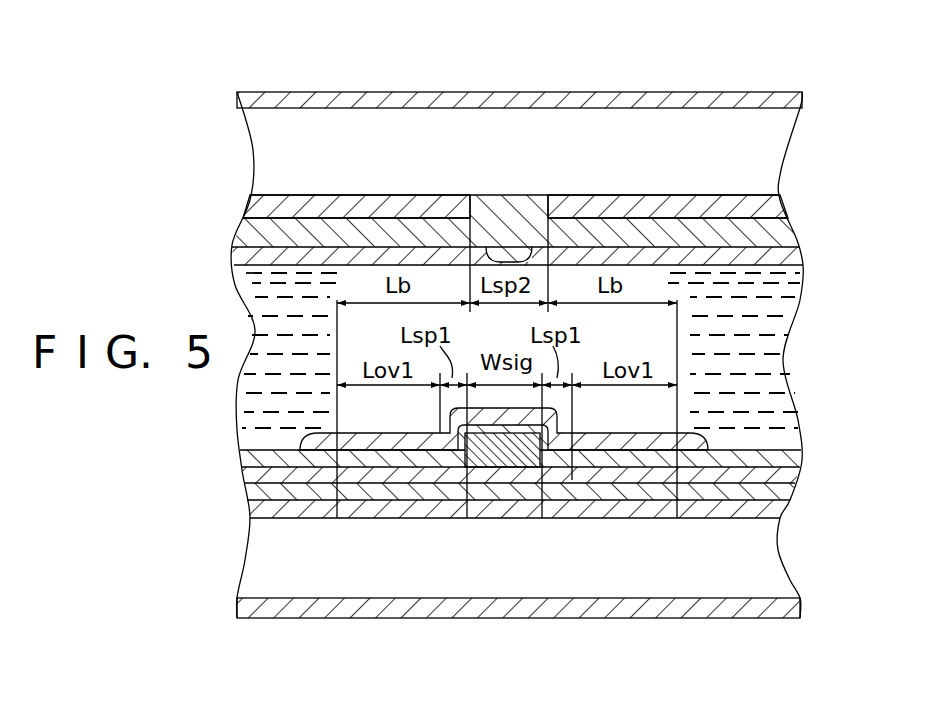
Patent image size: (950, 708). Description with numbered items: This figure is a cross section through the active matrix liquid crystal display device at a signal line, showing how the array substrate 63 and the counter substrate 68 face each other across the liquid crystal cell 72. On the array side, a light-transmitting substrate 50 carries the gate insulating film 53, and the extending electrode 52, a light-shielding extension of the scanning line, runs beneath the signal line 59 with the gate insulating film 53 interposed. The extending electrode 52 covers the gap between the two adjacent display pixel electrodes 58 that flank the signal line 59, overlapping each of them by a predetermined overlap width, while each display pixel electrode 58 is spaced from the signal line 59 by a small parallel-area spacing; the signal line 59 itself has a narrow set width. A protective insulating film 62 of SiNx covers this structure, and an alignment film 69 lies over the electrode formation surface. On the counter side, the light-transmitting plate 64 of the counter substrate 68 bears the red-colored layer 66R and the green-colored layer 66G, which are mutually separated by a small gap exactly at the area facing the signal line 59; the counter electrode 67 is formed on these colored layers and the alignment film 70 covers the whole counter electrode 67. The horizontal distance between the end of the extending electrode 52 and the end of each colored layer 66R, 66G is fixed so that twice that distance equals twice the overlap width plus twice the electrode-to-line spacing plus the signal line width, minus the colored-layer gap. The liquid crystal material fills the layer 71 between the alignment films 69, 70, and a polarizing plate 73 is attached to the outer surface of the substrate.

The light-transmitting substrate 50 is at (775, 550).
The extending electrode 52 is at (370, 505).
The gate insulating film 53 is at (775, 508).
The display pixel electrode 58 is at (270, 500).
The signal line 59 is at (510, 500).
The protective insulating film 62 is at (795, 478).
The array substrate 63 is at (785, 618).
The upper substrate 64 is at (782, 122).
The red-colored layer 66R is at (245, 207).
The green-colored layer 66G is at (785, 208).
The counter electrode 67 is at (783, 232).
The counter substrate 68 is at (758, 88).
The alignment film 69 is at (800, 458).
The alignment film 70 is at (778, 256).
The liquid crystal layer 71 is at (770, 360).
The liquid crystal cell 72 is at (598, 607).
The polarizing plate 73 is at (612, 92).